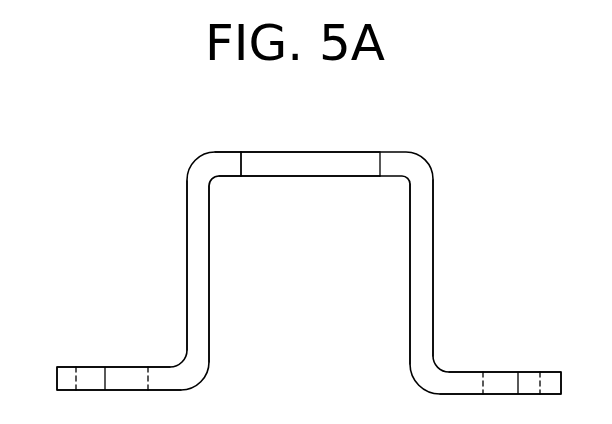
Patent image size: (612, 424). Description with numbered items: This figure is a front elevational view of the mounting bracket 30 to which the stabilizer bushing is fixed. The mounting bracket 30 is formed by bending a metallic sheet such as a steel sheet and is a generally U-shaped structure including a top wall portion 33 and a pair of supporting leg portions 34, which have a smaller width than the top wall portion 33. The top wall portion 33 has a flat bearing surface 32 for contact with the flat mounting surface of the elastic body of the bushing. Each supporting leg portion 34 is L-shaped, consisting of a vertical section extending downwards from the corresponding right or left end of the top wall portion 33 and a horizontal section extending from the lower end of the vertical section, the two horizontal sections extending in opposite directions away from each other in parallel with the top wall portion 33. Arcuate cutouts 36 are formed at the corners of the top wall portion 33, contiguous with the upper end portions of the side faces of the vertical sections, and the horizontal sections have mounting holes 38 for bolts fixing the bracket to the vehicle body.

The mounting bracket 30 is at (464, 191).
The bearing surface 32 is at (266, 152).
The top wall portion 33 is at (301, 162).
The supporting leg portion 34 is at (197, 253).
The arcuate cutout 36 is at (388, 162).
The mounting hole 38 is at (147, 386).